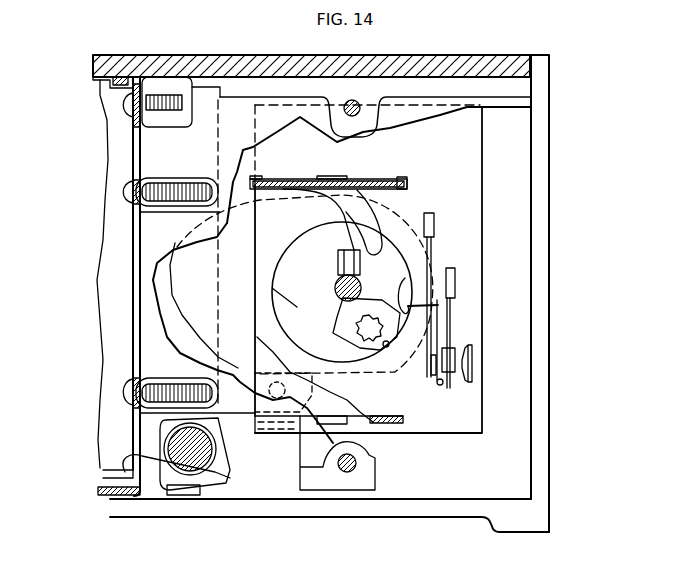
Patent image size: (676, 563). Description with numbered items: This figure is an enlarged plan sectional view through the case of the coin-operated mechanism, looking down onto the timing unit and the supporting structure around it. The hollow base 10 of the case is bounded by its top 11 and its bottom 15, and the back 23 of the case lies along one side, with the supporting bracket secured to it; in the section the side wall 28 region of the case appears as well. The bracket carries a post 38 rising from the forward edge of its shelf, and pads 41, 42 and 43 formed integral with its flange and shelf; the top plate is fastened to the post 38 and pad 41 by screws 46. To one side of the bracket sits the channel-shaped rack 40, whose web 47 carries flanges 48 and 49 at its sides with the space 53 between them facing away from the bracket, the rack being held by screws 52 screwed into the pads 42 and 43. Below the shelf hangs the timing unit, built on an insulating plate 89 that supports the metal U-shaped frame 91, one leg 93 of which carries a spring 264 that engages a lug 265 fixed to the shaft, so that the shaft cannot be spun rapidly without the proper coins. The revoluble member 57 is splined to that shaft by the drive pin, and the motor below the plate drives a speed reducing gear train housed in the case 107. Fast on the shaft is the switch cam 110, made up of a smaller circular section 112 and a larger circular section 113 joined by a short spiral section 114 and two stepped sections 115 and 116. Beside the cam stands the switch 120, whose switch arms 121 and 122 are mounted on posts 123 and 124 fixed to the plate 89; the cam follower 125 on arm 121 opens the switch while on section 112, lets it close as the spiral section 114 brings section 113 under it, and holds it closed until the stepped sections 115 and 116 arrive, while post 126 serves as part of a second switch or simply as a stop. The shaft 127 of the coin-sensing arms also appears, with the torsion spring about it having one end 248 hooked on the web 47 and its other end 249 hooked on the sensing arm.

The base 10 is at (548, 530).
The top 11 is at (521, 378).
The bottom 15 is at (125, 288).
The back 23 is at (499, 64).
The side wall 28 is at (542, 183).
The post 38 is at (318, 478).
The channel-shaped rack 40 is at (128, 333).
The pad 41 is at (370, 121).
The pad 42 is at (183, 119).
The pad 43 is at (209, 178).
The screws 46 is at (343, 114).
The web 47 is at (127, 476).
The flange 48 is at (119, 77).
The flange 49 is at (105, 493).
The screws 52 is at (127, 102).
The space 53 is at (110, 90).
The revoluble member 57 is at (335, 283).
The insulating plate 89 is at (466, 416).
The U-shaped frame 91 is at (394, 424).
The leg 93 is at (357, 186).
The case 107 is at (175, 305).
The switch cam 110 is at (309, 261).
The circular section 112 is at (392, 239).
The circular section 113 is at (337, 370).
The spiral section 114 is at (336, 319).
The stepped section 115 is at (420, 272).
The stepped section 116 is at (387, 349).
The switch 120 is at (442, 333).
The switch arm 121 is at (432, 243).
The switch arm 122 is at (452, 320).
The post 123 is at (431, 214).
The post 124 is at (453, 272).
The cam follower 125 is at (451, 305).
The post 126 is at (474, 363).
The shaft 127 is at (188, 462).
The end 248 is at (127, 458).
The end 249 is at (203, 468).
The spring 264 is at (402, 181).
The lug 265 is at (336, 257).